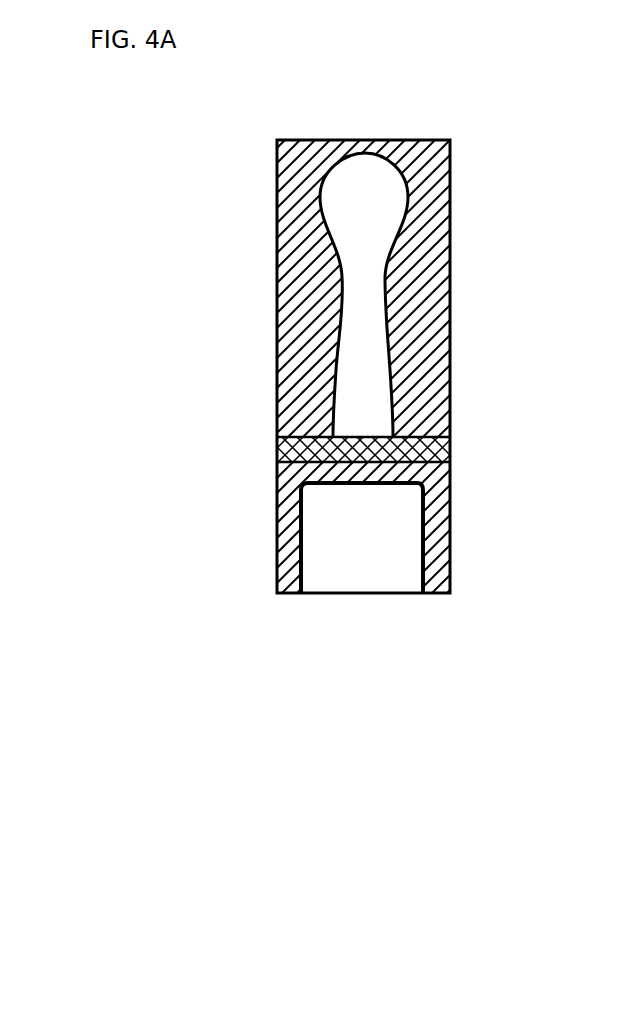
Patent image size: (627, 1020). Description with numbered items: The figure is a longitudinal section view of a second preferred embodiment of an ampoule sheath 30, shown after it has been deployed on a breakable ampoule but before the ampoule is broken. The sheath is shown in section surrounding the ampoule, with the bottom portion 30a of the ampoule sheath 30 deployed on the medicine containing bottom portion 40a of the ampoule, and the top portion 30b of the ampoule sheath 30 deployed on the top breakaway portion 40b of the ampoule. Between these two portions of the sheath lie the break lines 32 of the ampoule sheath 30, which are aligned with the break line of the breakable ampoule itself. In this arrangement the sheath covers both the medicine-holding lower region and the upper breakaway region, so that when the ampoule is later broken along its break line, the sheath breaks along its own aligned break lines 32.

The ampoule sheath 30 is at (180, 415).
The bottom portion of the ampoule sheath 30a is at (277, 572).
The top portion of the ampoule sheath 30b is at (270, 213).
The break lines 32 is at (453, 440).
The medicine containing bottom portion of the ampoule 40a is at (333, 518).
The top breakaway portion of the ampoule 40b is at (327, 328).